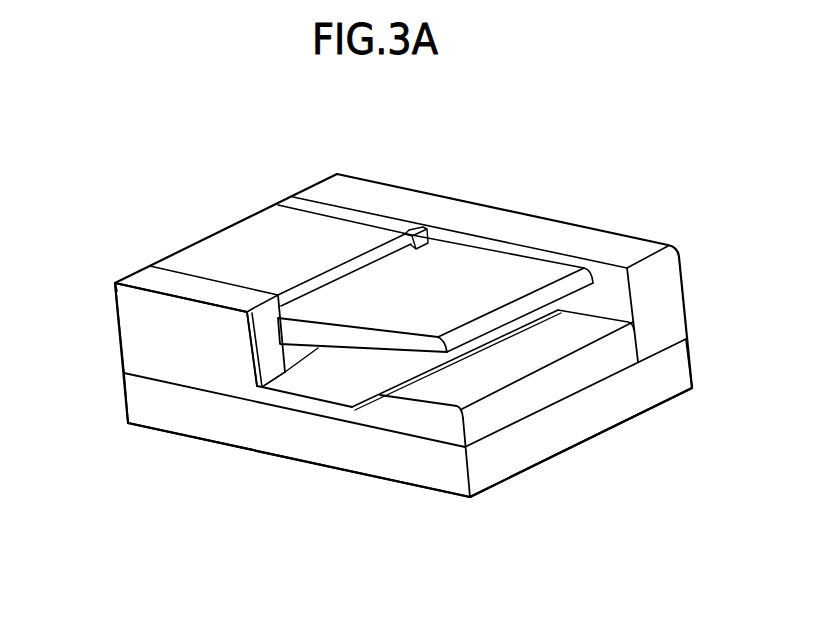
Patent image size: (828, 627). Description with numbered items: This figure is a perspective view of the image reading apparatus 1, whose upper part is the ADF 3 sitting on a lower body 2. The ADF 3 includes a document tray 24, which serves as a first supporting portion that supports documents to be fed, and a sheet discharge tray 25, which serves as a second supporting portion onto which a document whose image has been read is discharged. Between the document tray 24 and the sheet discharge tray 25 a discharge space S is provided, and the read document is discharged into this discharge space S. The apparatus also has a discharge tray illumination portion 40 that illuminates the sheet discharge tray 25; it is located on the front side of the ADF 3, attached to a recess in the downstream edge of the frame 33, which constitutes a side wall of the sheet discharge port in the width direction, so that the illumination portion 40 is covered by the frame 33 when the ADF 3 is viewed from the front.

The image reading apparatus 1 is at (686, 212).
The base housing 2 is at (528, 454).
The ADF 3 is at (236, 199).
The document tray 24 is at (458, 268).
The sheet discharge tray 25 is at (542, 342).
The frame 33 is at (117, 336).
The discharge tray illumination portion 40 is at (283, 356).
The discharge space S is at (372, 366).